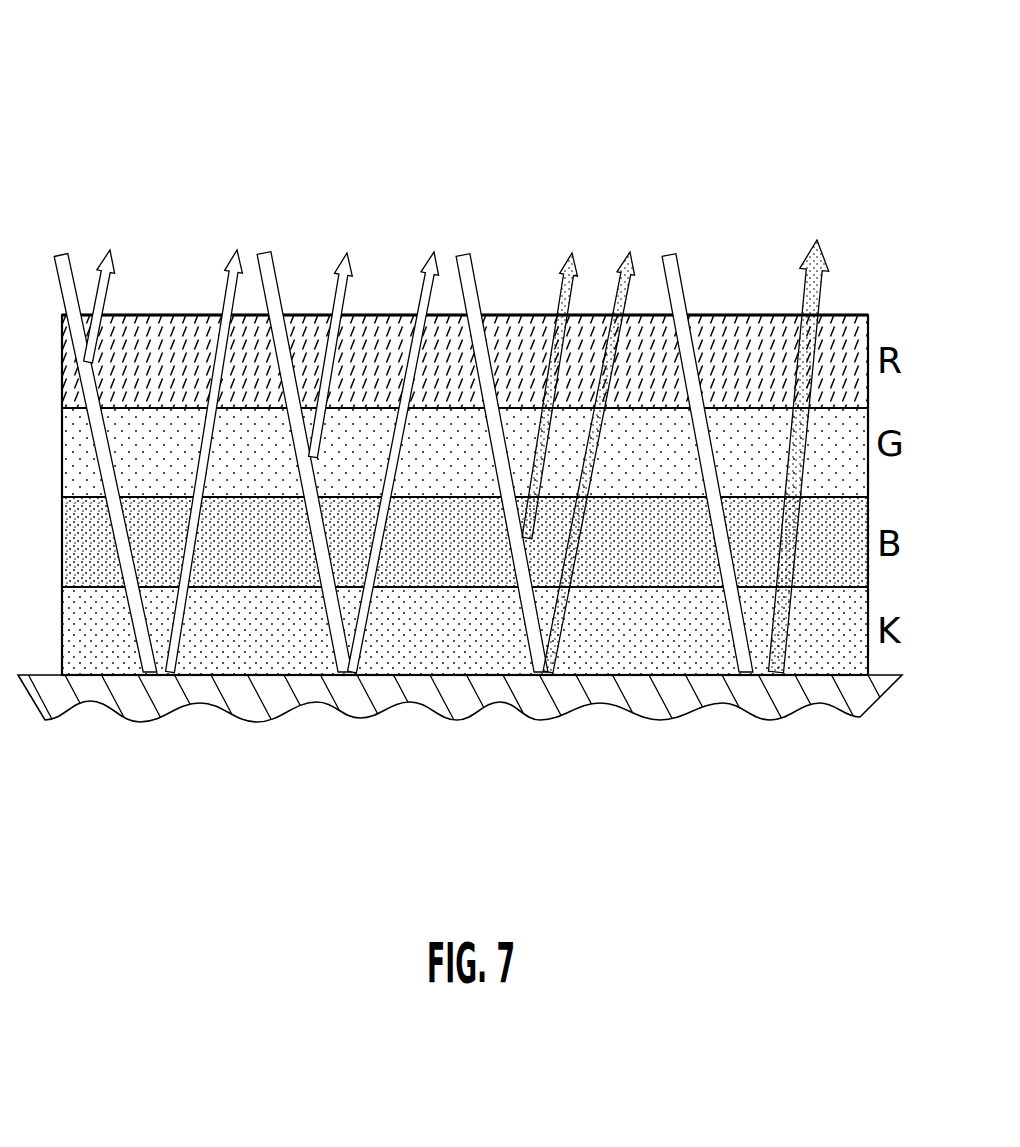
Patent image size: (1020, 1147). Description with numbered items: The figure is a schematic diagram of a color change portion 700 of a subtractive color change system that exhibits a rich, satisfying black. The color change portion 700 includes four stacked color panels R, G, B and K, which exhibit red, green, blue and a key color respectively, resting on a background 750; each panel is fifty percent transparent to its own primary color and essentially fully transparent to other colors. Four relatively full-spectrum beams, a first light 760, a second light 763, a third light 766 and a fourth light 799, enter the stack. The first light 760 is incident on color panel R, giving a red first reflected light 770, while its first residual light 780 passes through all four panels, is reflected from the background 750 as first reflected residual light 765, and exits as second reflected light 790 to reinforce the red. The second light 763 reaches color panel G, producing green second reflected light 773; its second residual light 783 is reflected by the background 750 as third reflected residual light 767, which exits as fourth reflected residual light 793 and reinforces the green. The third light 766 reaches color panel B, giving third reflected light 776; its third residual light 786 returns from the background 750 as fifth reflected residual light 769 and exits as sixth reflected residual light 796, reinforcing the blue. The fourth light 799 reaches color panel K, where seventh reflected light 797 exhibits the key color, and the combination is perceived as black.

The color change portion 700 is at (136, 86).
The background 750 is at (890, 676).
The first light 760 is at (63, 252).
The second light 763 is at (266, 250).
The third light 766 is at (464, 252).
The fourth light 799 is at (671, 252).
The first reflected light 770 is at (112, 250).
The second reflected light 773 is at (345, 254).
The third reflected light 776 is at (571, 254).
The second reflected light 790 is at (238, 252).
The fourth reflected residual light 793 is at (433, 252).
The sixth reflected residual light 796 is at (630, 252).
The seventh reflected light 797 is at (816, 240).
The first residual light 780 is at (143, 647).
The first reflected residual light 765 is at (163, 647).
The second residual light 783 is at (342, 650).
The third reflected residual light 767 is at (355, 648).
The third residual light 786 is at (533, 647).
The fifth reflected residual light 769 is at (553, 648).